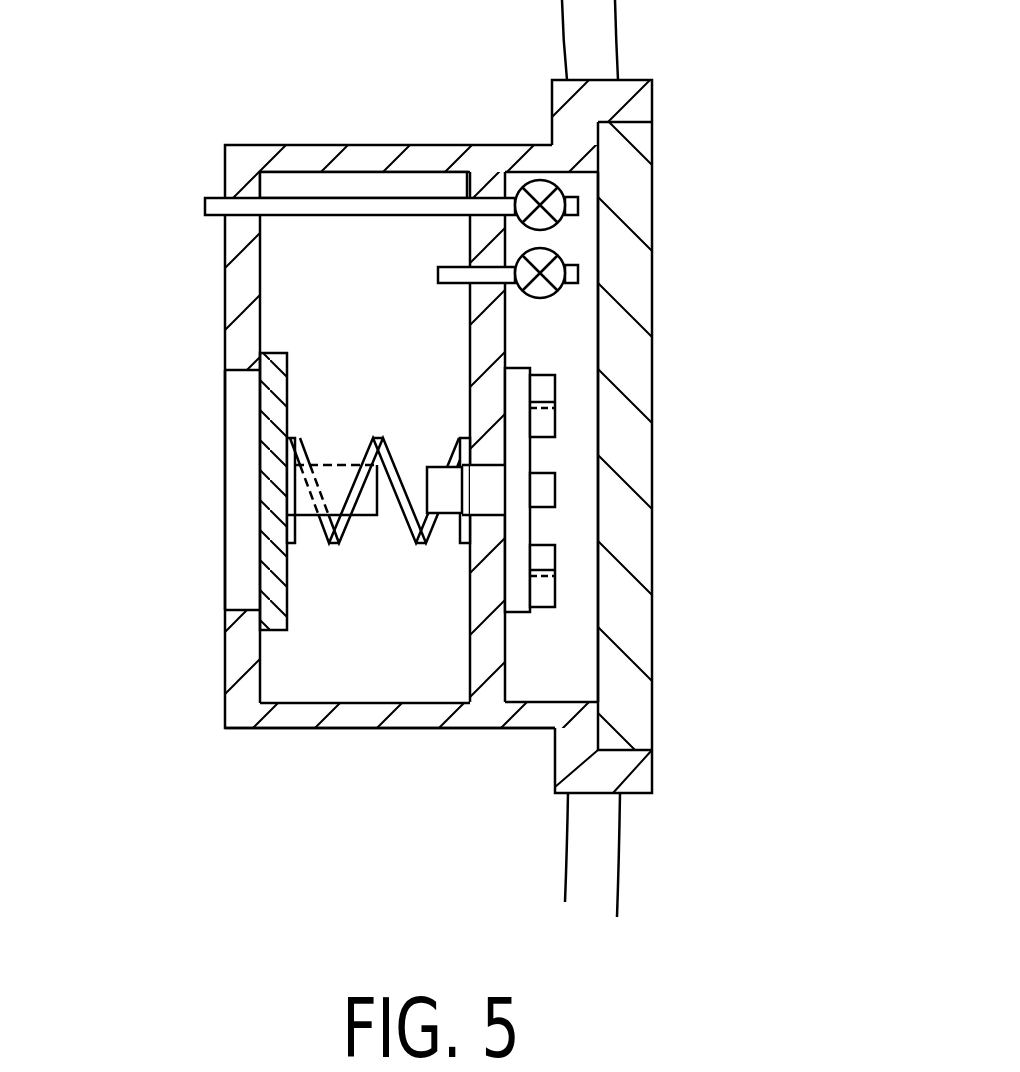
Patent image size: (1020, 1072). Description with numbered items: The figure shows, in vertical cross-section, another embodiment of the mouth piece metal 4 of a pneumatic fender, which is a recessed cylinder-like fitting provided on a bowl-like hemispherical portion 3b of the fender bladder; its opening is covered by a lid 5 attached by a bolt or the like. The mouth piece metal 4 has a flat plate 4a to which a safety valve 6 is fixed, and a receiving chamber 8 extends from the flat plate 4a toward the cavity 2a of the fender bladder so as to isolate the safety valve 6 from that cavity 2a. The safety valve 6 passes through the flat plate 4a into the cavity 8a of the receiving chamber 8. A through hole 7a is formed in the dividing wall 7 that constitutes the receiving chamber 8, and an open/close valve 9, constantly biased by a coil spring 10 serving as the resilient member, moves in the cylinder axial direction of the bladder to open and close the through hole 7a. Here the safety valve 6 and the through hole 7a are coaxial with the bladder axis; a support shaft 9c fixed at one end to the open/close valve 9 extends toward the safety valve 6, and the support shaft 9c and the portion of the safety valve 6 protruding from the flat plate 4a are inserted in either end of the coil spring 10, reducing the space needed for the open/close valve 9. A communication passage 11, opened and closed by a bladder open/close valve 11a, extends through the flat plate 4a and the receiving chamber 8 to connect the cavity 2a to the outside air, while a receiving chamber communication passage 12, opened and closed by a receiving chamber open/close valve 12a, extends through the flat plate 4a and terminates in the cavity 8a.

The cavity 2a is at (165, 738).
The hemispherical portion 3b is at (613, 845).
The mouth piece metal 4 is at (658, 210).
The flat plate 4a is at (487, 595).
The lid 5 is at (638, 460).
The safety valve 6 is at (437, 465).
The dividing wall 7 is at (238, 338).
The through hole 7a is at (232, 598).
The receiving chamber 8 is at (392, 732).
The cavity of the receiving chamber 8a is at (310, 687).
The open/close valve 9 is at (280, 568).
The support shaft 9c is at (337, 475).
The coil spring 10 is at (358, 492).
The communication passage 11 is at (213, 212).
The bladder open/close valve 11a is at (540, 190).
The receiving chamber communication passage 12 is at (457, 272).
The receiving chamber open/close valve 12a is at (540, 290).